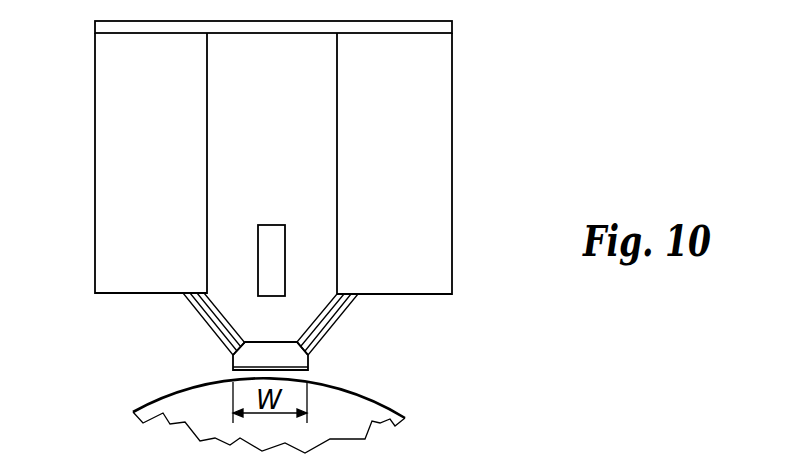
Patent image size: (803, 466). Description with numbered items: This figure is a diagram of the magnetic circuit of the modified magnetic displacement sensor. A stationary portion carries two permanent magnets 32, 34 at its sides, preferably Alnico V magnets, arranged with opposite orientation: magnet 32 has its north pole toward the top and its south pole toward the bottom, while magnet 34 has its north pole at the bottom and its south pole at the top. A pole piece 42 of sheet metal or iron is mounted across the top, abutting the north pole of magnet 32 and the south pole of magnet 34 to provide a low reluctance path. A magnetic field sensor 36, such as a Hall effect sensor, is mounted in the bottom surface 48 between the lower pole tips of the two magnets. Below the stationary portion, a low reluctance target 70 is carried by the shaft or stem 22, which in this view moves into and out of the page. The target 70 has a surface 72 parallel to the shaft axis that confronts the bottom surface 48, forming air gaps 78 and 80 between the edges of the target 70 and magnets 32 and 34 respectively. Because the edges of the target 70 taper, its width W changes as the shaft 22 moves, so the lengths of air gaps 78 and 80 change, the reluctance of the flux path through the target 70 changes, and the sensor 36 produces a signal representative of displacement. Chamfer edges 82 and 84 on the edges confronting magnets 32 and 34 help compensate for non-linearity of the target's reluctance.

The pole piece 42 is at (449, 23).
The permanent magnet 34 is at (94, 142).
The permanent magnet 32 is at (452, 158).
The bottom surface 48 is at (432, 297).
The magnetic field sensor 36 is at (270, 225).
The air gap 80 is at (184, 307).
The air gap 78 is at (338, 318).
The low reluctance target 70 is at (253, 348).
The surface 72 is at (268, 341).
The chamfer edge 84 is at (233, 354).
The chamfer edge 82 is at (310, 357).
The shaft 22 is at (387, 405).